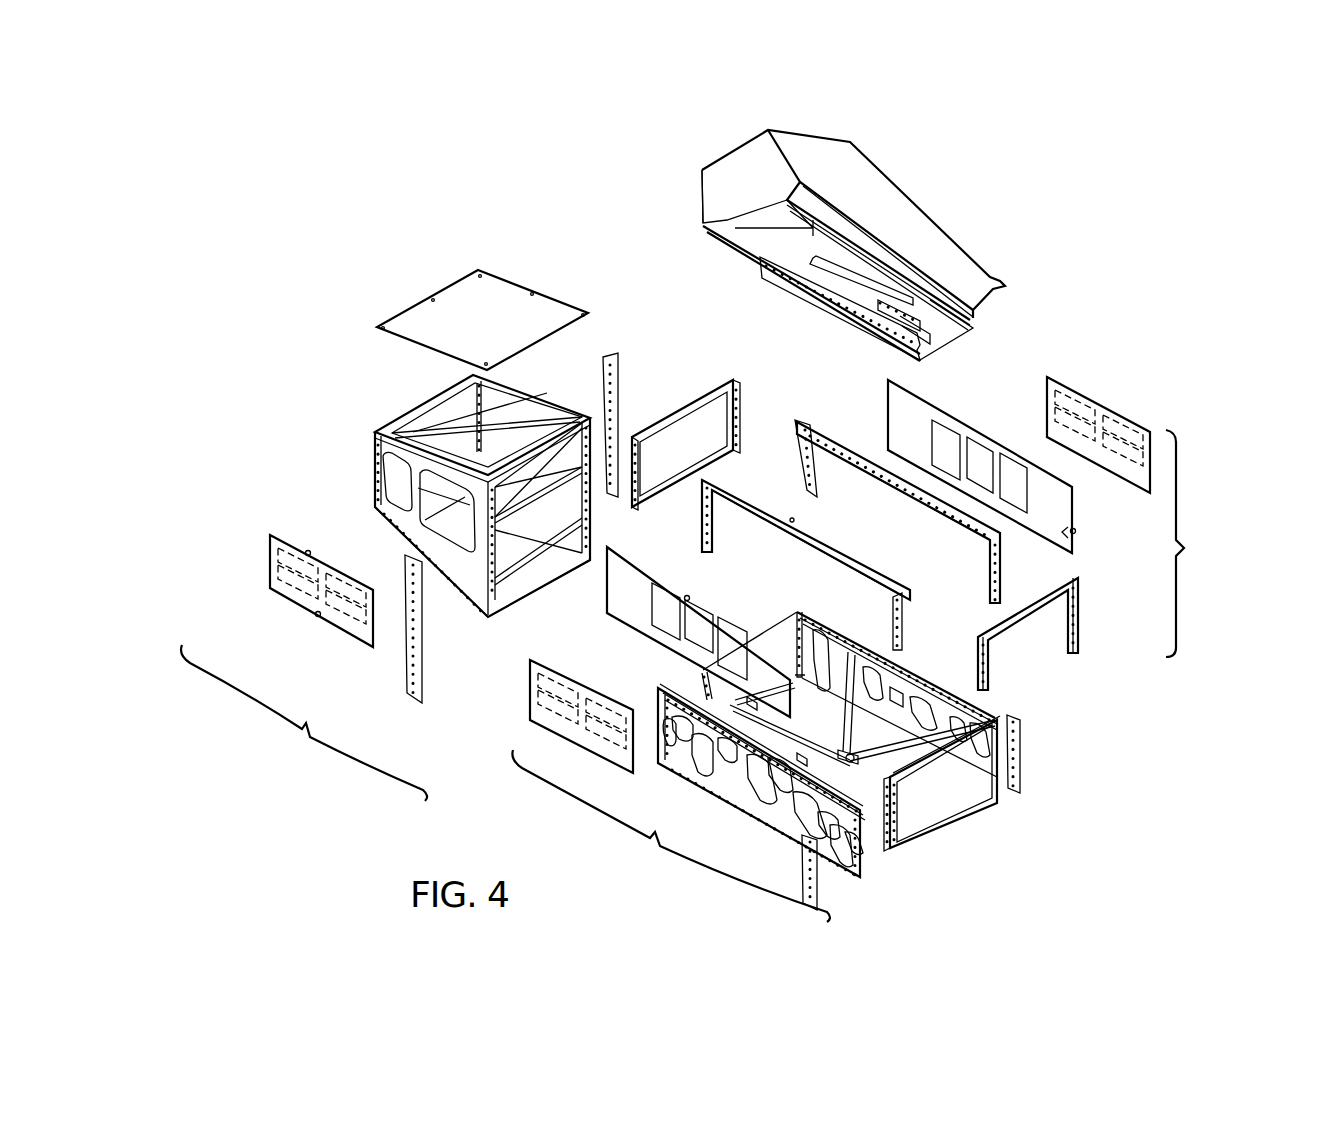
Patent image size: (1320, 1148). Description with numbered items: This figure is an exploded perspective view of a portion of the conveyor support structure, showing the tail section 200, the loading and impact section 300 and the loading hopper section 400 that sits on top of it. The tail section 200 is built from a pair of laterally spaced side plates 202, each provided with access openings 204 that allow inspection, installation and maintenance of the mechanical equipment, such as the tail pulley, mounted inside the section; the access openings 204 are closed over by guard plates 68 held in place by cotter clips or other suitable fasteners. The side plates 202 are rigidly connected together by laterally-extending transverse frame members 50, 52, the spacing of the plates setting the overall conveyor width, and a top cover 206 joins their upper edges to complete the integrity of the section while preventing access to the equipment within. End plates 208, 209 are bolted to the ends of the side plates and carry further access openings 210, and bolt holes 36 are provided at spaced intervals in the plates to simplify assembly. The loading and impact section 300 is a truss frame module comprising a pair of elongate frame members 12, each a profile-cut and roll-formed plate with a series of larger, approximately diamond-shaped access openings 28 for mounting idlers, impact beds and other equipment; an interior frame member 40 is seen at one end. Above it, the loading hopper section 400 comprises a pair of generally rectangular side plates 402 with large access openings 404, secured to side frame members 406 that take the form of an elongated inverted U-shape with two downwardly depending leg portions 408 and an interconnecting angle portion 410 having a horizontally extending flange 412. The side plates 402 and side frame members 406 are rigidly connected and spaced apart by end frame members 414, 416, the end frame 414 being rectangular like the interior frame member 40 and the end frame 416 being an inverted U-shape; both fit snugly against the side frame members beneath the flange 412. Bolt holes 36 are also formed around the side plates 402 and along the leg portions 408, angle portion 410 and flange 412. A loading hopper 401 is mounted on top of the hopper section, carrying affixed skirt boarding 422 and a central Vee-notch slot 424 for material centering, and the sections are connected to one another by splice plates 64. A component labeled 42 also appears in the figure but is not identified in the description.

The elongate frame member 12 is at (985, 722).
The access opening 28 is at (705, 775).
The bolt hole 36 is at (378, 470).
The interior frame member 40 is at (940, 825).
The fastener 42 is at (800, 512).
The transverse frame member 50 is at (388, 430).
The transverse frame member 52 is at (510, 440).
The splice plate 64 is at (614, 352).
The guard plate 68 is at (285, 600).
The tail section 200 is at (304, 723).
The side plate 202 is at (530, 410).
The access opening 204 is at (395, 470).
The top cover 206 is at (476, 300).
The end plate 208 is at (430, 405).
The end plate 209 is at (503, 620).
The access opening 210 is at (592, 476).
The loading and impact section 300 is at (671, 836).
The loading hopper section 400 is at (1201, 543).
The loading hopper 401 is at (926, 212).
The side plate 402 is at (900, 395).
The access opening 404 is at (1003, 472).
The side frame member 406 is at (720, 503).
The leg portion 408 is at (802, 455).
The angle portion 410 is at (850, 560).
The flange 412 is at (912, 575).
The end frame member 414 is at (695, 400).
The end frame member 416 is at (1084, 620).
The skirt boarding 422 is at (728, 183).
The Vee-notch slot 424 is at (930, 320).